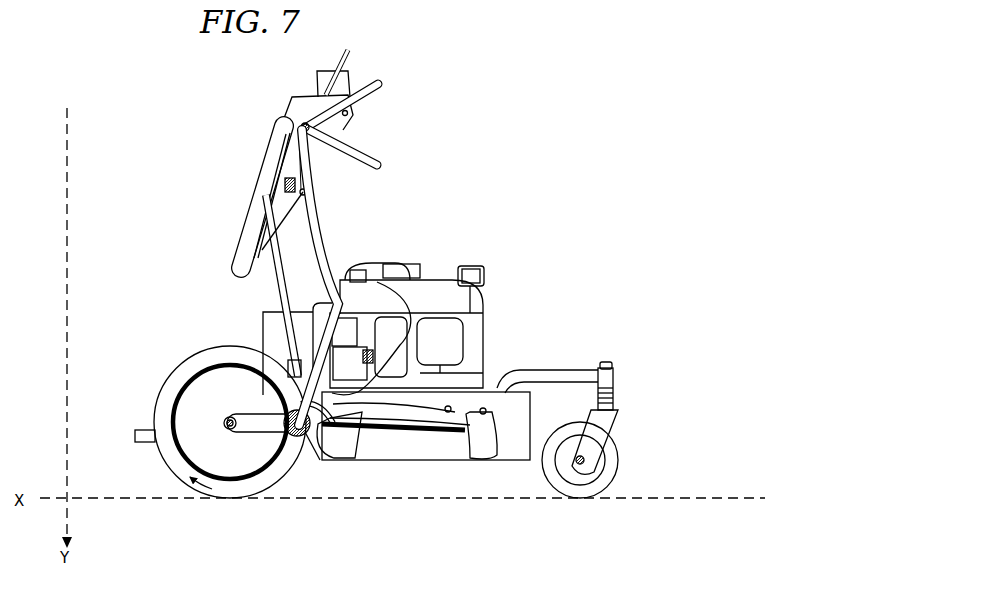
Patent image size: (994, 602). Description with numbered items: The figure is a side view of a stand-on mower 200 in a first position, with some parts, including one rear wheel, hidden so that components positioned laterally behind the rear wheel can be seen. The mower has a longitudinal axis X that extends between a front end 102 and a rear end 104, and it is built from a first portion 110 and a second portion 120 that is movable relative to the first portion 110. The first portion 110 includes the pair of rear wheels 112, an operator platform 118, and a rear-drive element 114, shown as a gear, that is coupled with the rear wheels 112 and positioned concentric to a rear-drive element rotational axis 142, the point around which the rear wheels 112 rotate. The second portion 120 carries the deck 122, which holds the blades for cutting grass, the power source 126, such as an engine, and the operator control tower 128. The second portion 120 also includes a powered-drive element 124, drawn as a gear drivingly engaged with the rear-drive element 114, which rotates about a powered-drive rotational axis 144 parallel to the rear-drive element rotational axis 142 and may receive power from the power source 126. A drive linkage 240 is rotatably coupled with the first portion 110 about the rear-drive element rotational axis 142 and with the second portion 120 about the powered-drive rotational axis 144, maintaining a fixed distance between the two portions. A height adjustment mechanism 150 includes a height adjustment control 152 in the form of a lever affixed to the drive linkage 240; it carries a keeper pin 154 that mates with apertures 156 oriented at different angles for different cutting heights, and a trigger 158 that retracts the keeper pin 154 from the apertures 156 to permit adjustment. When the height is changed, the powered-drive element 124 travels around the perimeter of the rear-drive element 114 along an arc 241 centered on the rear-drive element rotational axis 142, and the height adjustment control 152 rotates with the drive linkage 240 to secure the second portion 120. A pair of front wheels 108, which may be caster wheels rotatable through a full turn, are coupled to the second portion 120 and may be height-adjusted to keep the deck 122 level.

The front end 102 is at (614, 312).
The rear end 104 is at (130, 434).
The front wheels 108 is at (616, 452).
The first portion 110 is at (238, 522).
The rear wheels 112 is at (219, 356).
The rear-drive element 114 is at (177, 449).
The operator platform 118 is at (150, 430).
The second portion 120 is at (414, 246).
The deck 122 is at (443, 450).
The powered-drive element 124 is at (336, 456).
The power source 126 is at (420, 292).
The operator control tower 128 is at (241, 121).
The rear-drive element rotational axis 142 is at (222, 416).
The powered-drive rotational axis 144 is at (304, 447).
The height adjustment mechanism 150 is at (384, 263).
The height adjustment control 152 is at (316, 243).
The keeper pin 154 is at (296, 352).
The apertures 156 is at (396, 430).
The trigger 158 is at (320, 158).
The stand-on mower 200 is at (423, 73).
The drive linkage 240 is at (281, 452).
The arc 241 is at (211, 492).